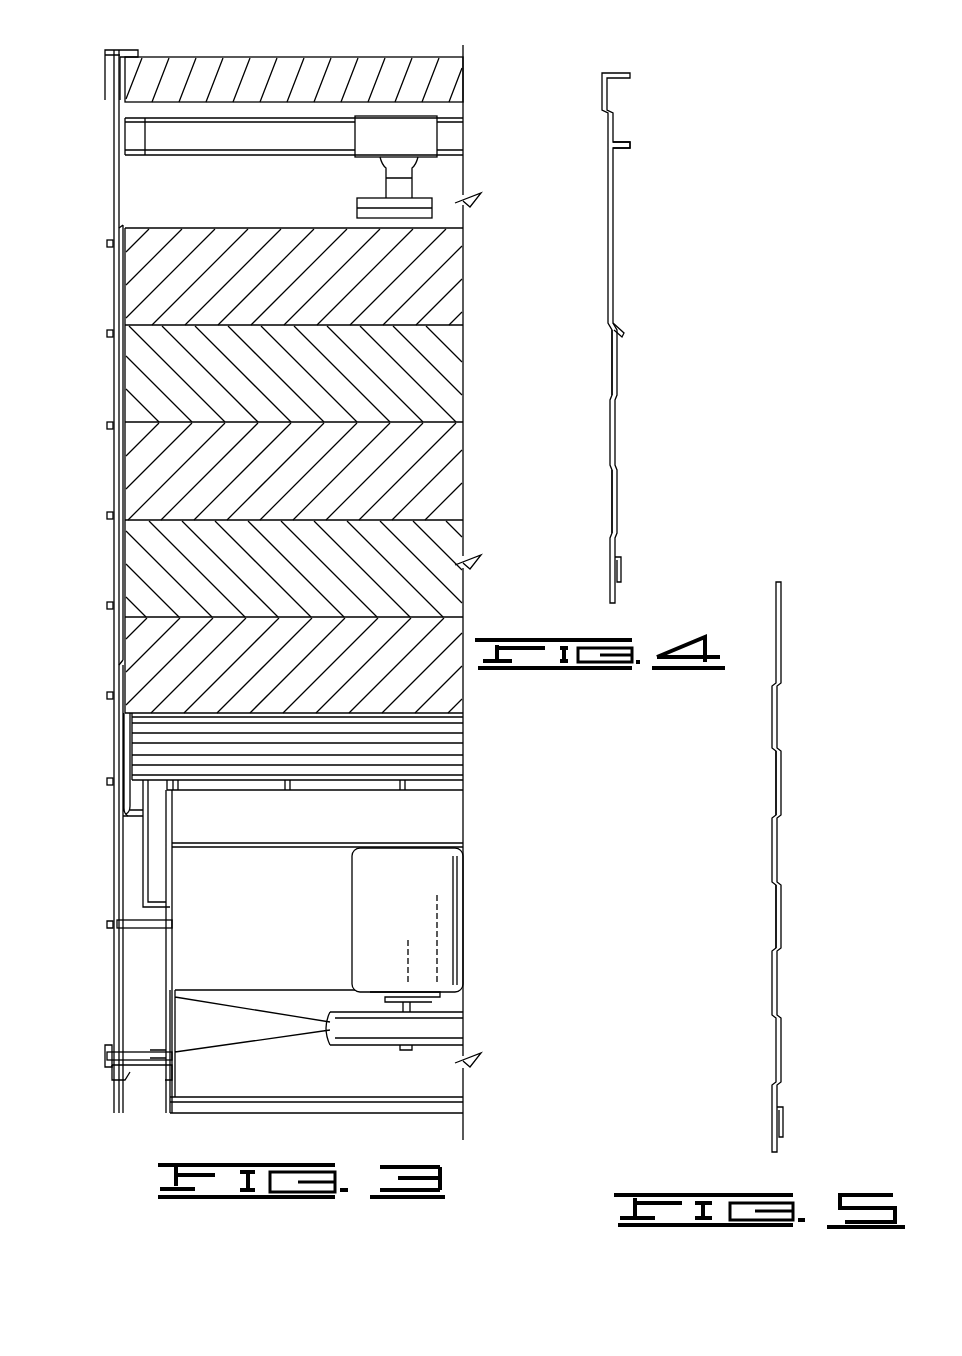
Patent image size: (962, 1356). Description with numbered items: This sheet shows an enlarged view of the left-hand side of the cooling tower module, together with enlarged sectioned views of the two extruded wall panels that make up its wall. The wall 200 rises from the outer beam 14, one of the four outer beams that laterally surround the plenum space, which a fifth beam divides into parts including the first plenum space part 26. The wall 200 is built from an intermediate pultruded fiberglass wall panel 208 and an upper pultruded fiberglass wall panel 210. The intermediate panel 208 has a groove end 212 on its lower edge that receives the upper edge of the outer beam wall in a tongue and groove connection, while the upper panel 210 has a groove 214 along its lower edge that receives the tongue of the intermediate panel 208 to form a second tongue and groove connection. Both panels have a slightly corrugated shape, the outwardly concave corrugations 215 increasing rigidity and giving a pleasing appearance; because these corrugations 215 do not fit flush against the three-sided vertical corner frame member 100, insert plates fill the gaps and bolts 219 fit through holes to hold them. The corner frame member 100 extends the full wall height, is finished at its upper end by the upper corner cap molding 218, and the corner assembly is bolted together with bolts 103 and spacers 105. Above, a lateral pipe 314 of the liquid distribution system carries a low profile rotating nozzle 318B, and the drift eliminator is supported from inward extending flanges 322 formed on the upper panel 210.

In FIG. 3, the outer beam 14 is at (118, 972).
In FIG. 5, the first plenum space part 26 is at (778, 582).
In FIG. 3, the three-sided vertical corner frame member 100 is at (115, 210).
In FIG. 3, the bolts 103 is at (112, 922).
In FIG. 3, the spacers 105 is at (150, 928).
In FIG. 3, the wall 200 is at (70, 581).
In FIG. 3, the intermediate pultruded fiberglass wall panel 208 is at (122, 637).
In FIG. 5, the intermediate pultruded fiberglass wall panel 208 is at (790, 733).
In FIG. 3, the upper pultruded fiberglass wall panel 210 is at (122, 372).
In FIG. 4, the upper pultruded fiberglass wall panel 210 is at (632, 244).
In FIG. 5, the groove end 212 is at (781, 1140).
In FIG. 4, the groove 214 is at (616, 582).
In FIG. 4, the outwardly concave corrugations 215 is at (613, 358).
In FIG. 5, the outwardly concave corrugations 215 is at (777, 781).
In FIG. 3, the upper corner cap molding 218 is at (112, 50).
In FIG. 3, the bolts 219 is at (113, 335).
In FIG. 3, the lateral pipe 314 is at (262, 128).
In FIG. 3, the rotating nozzle 318B is at (402, 180).
In FIG. 4, the inward extending flange 322 is at (618, 142).